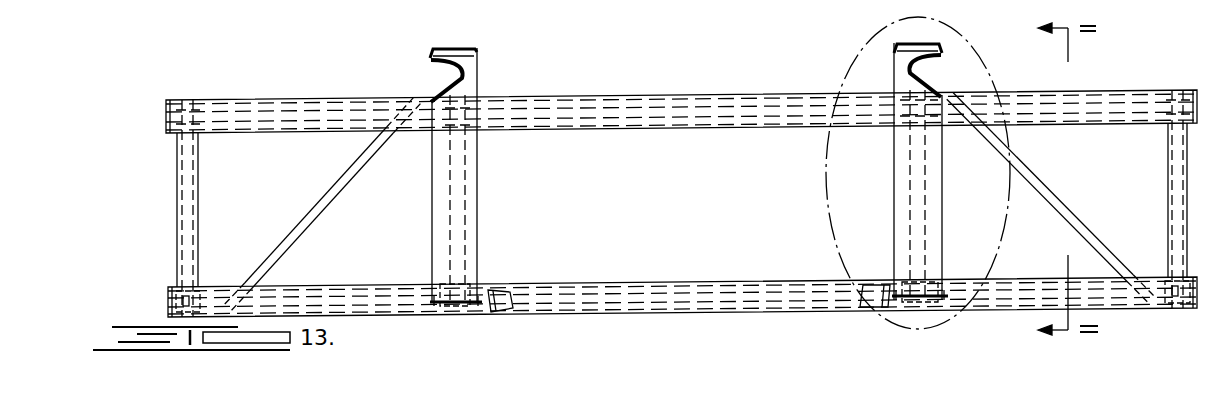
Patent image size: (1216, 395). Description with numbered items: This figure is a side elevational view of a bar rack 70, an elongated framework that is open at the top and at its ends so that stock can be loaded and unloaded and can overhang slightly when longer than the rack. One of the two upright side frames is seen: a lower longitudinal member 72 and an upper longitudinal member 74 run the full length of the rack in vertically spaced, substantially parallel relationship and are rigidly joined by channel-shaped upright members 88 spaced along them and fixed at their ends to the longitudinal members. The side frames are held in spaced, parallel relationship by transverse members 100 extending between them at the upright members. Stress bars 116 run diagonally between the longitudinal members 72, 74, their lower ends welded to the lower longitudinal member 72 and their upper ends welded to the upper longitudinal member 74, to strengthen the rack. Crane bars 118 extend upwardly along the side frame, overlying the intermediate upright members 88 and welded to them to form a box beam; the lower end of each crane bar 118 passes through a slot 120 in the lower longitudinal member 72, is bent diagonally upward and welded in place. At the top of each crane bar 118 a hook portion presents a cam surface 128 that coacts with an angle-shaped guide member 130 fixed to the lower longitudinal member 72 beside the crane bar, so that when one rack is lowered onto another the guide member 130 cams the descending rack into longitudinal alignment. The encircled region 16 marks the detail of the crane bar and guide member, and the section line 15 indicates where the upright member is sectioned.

The bar rack 70 is at (287, 96).
The lower longitudinal member 72 is at (602, 284).
The upper longitudinal member 74 is at (603, 97).
The upright member 88 is at (199, 197).
The transverse member 100 is at (204, 286).
The stress bar 116 is at (320, 203).
The crane bar 118 is at (478, 190).
The slot 120 is at (483, 296).
The cam surface 128 is at (478, 80).
The guide member 130 is at (500, 289).
The detail area of FIG. 16 is at (830, 44).
The section line 15- 15 is at (1045, 178).